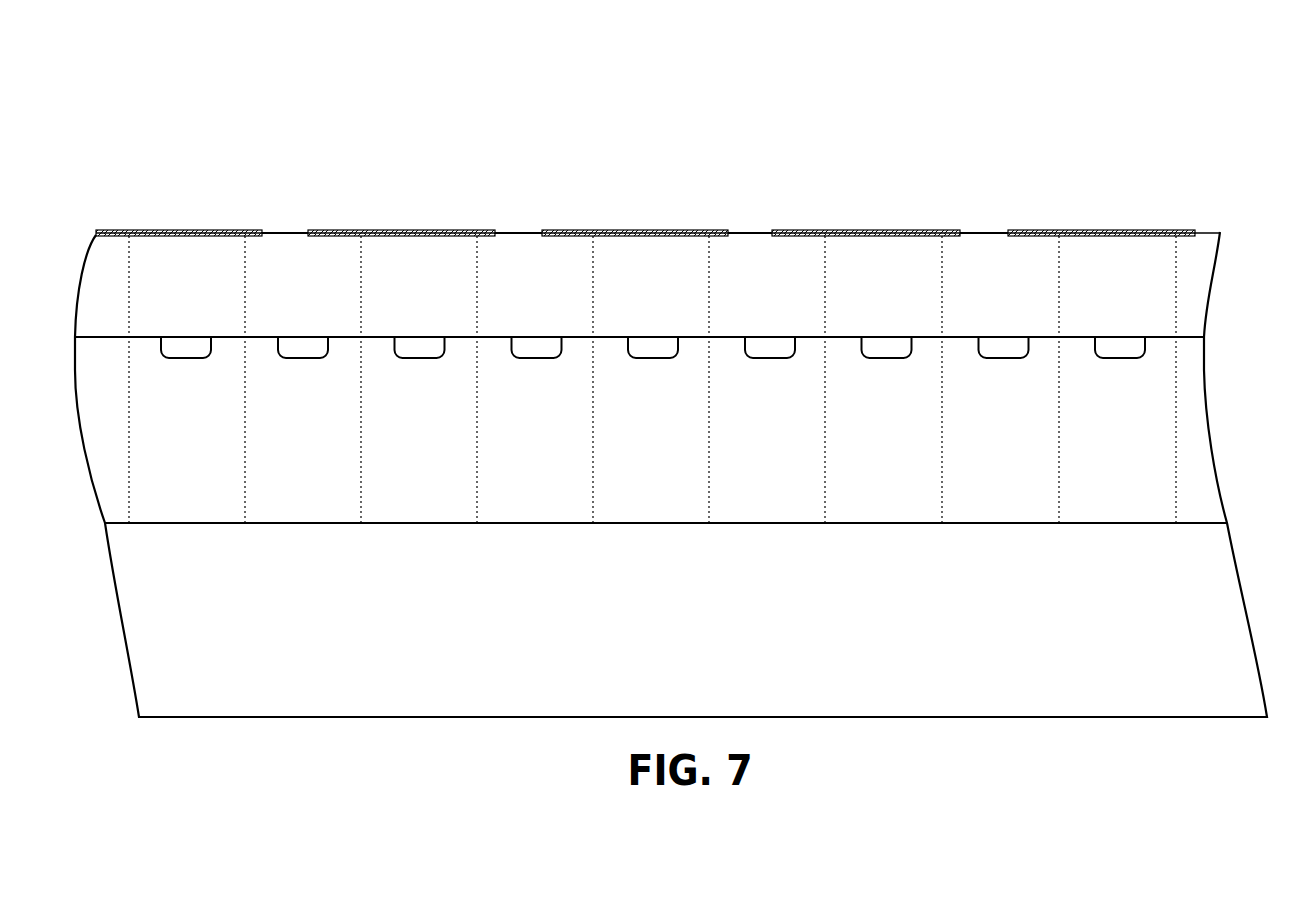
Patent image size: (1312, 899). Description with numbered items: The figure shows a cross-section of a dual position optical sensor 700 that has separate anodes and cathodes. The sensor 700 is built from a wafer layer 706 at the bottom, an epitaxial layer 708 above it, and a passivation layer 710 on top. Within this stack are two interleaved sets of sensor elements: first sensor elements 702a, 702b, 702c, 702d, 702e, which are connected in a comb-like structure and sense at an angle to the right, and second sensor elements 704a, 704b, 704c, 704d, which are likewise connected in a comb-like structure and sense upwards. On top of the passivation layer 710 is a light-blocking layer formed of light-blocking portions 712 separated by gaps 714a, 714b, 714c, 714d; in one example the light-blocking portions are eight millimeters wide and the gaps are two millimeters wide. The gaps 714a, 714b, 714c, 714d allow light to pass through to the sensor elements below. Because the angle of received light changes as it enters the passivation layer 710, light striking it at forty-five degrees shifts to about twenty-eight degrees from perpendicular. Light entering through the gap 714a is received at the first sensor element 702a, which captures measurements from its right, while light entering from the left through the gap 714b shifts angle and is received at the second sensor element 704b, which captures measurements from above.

The dual position optical sensor 700 is at (667, 42).
The first sensor element 702a is at (174, 358).
The first sensor element 702b is at (408, 358).
The first sensor element 702c is at (641, 358).
The first sensor element 702d is at (874, 358).
The first sensor element 702e is at (1108, 358).
The second sensor element 704a is at (291, 358).
The second sensor element 704b is at (524, 358).
The second sensor element 704c is at (758, 358).
The second sensor element 704d is at (992, 358).
The wafer layer 706 is at (1223, 597).
The epitaxial layer 708 is at (1192, 441).
The passivation layer 710 is at (1190, 293).
The metal contact 712 is at (133, 230).
The gap 714a is at (282, 231).
The gap 714b is at (523, 230).
The gap 714c is at (752, 228).
The gap 714d is at (982, 230).